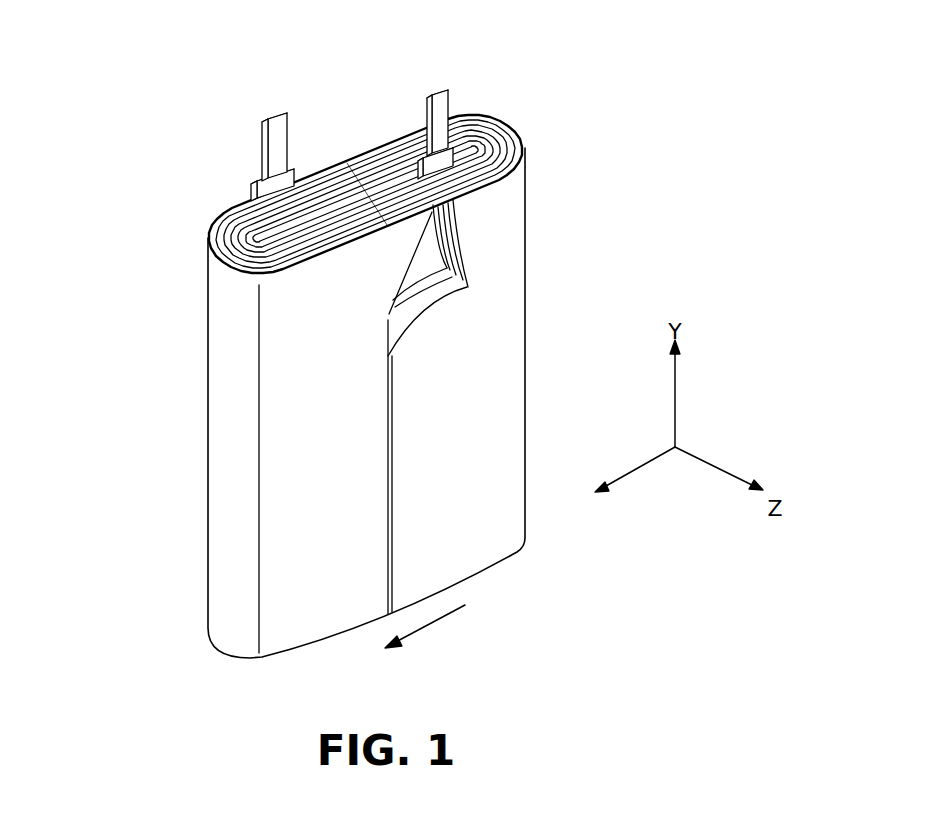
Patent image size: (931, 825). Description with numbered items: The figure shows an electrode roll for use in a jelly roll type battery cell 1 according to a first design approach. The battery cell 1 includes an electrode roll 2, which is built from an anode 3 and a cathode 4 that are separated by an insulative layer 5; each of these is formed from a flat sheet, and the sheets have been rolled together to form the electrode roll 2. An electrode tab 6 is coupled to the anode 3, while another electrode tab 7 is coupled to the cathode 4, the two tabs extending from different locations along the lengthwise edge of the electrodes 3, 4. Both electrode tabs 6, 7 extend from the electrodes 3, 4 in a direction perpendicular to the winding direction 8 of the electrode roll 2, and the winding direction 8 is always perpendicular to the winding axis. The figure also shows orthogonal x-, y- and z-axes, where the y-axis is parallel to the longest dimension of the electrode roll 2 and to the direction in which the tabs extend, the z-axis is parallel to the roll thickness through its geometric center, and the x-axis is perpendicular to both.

The battery cell 1 is at (161, 284).
The electrode roll 2 is at (488, 146).
The anode 3 is at (458, 242).
The cathode 4 is at (467, 268).
The insulative layer 5 is at (447, 258).
The electrode tab 6 is at (272, 118).
The electrode tab 7 is at (433, 92).
The winding direction 8 is at (433, 625).